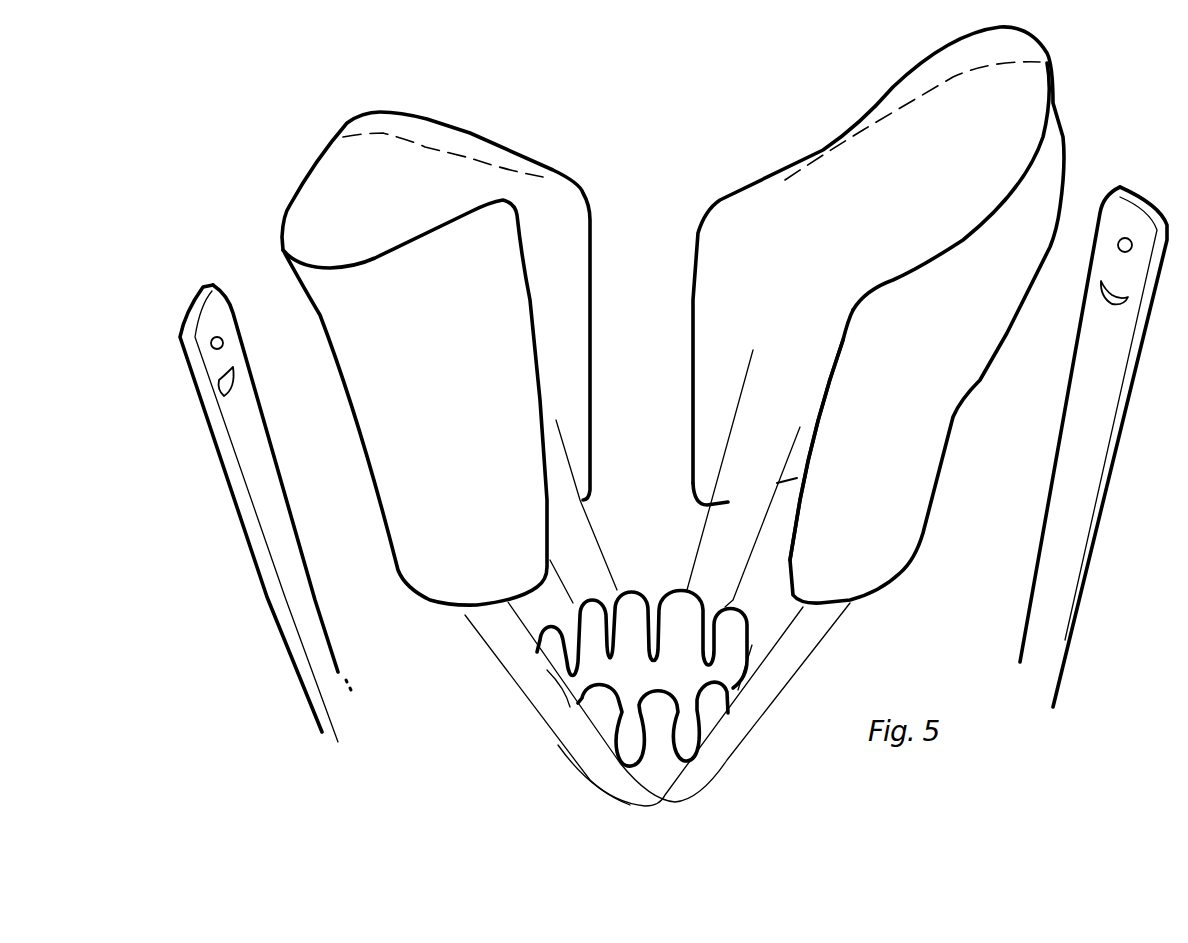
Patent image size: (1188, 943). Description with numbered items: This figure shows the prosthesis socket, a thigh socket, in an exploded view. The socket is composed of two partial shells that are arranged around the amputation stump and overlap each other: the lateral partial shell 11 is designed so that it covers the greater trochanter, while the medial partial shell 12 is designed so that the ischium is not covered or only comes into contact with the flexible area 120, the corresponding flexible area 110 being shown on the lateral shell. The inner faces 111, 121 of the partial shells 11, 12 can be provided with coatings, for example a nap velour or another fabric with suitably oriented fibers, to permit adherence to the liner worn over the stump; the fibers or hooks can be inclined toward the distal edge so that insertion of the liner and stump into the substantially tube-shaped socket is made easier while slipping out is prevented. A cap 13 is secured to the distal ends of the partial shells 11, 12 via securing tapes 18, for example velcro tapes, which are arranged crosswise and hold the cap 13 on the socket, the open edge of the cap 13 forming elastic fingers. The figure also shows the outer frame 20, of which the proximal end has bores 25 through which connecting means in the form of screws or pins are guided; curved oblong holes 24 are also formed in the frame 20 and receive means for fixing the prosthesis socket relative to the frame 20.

The lateral partial shell 11 is at (885, 315).
The flexible area 110 is at (893, 90).
The inner face 111 is at (728, 283).
The medial partial shell 12 is at (422, 336).
The flexible area 120 is at (410, 125).
The inner face 121 is at (562, 312).
The cap 13 is at (632, 603).
The securing tapes 18 is at (515, 680).
The outer frame 20 is at (242, 525).
The curved oblong holes 24 is at (226, 393).
The bores 25 is at (212, 347).